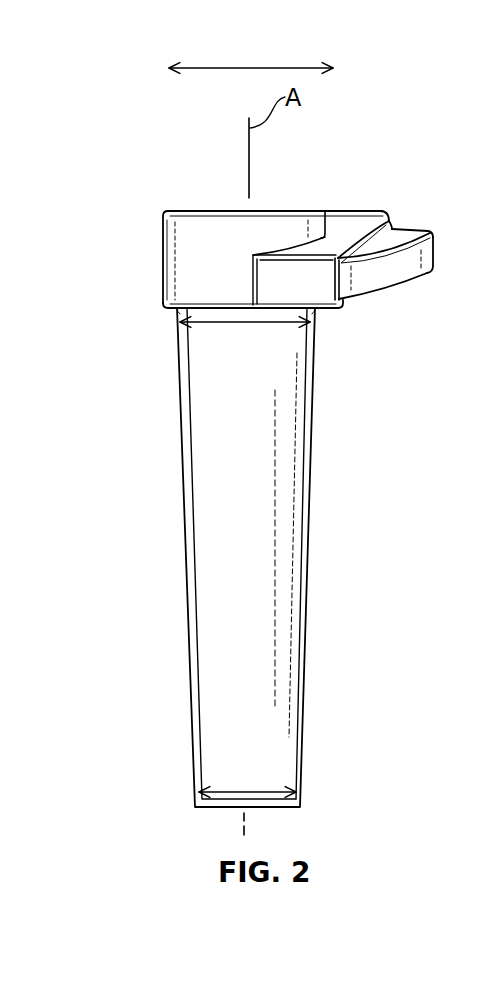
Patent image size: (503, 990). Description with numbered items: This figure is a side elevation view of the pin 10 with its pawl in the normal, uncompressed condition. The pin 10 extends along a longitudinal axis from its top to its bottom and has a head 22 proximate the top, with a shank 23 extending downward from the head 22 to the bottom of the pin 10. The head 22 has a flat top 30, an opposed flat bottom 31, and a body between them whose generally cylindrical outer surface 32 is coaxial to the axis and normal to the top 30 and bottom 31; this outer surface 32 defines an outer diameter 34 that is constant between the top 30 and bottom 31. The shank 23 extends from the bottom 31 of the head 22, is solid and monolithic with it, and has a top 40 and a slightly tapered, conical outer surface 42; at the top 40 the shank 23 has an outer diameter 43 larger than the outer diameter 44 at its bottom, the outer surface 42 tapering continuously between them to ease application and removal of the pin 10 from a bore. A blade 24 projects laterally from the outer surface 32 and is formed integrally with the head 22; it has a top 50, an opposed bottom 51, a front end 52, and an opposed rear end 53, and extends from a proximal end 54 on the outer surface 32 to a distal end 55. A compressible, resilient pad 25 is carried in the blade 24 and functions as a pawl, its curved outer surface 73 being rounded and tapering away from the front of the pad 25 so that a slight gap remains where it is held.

The pin 10 is at (168, 752).
The head 22 is at (163, 252).
The shank 23 is at (202, 606).
The blade 24 is at (351, 212).
The pad 25 is at (420, 234).
The top of head 30 is at (183, 210).
The bottom of head 31 is at (172, 315).
The outer surface of head 32 is at (183, 290).
The outer diameter of head 34 is at (270, 68).
The top of shank 40 is at (318, 315).
The outer surface of shank 42 is at (293, 609).
The outer diameter at top of shank 43 is at (247, 323).
The outer diameter at bottom of shank 44 is at (250, 790).
The top of blade 50 is at (297, 250).
The bottom of blade 51 is at (348, 306).
The front end of blade 52 is at (275, 277).
The rear end of blade 53 is at (393, 221).
The proximal end of blade 54 is at (320, 232).
The distal end of blade 55 is at (417, 232).
The curved outer surface of pad 73 is at (405, 268).